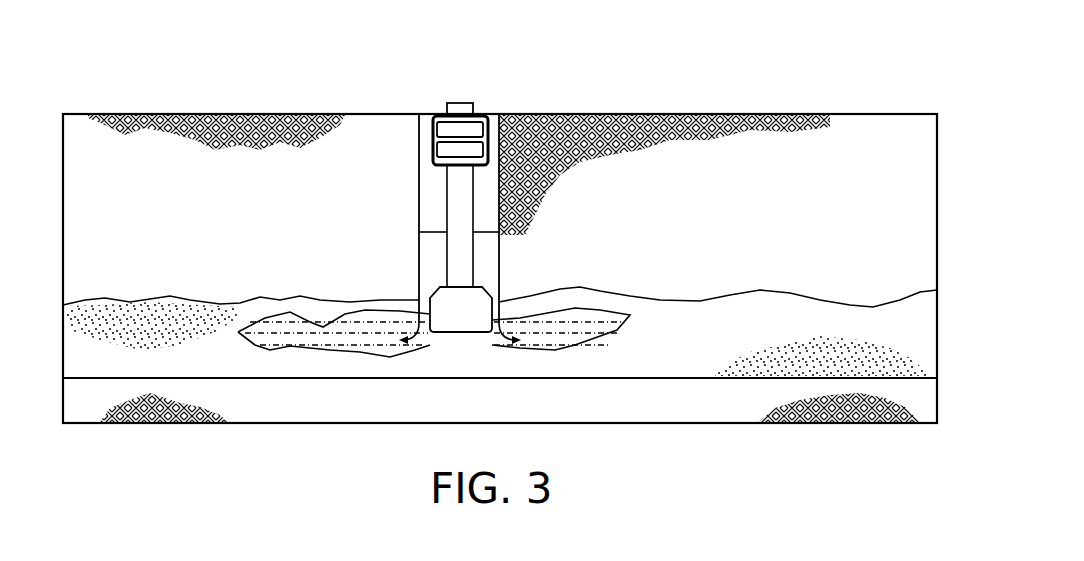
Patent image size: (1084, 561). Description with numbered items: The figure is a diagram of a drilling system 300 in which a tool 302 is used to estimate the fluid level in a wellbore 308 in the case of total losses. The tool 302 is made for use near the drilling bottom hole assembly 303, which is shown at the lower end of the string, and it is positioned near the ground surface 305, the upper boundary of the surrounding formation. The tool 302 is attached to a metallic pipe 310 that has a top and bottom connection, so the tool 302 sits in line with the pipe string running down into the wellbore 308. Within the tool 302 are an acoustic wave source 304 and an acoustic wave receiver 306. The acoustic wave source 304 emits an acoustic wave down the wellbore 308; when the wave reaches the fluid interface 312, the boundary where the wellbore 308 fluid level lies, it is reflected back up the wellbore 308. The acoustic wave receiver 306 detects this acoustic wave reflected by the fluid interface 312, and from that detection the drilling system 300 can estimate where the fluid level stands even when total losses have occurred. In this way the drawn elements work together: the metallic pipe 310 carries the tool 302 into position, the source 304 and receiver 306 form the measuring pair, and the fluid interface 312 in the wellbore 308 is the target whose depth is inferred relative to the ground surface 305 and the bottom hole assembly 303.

The drilling system 300 is at (738, 77).
The tool 302 is at (436, 167).
The drilling bottom hole assembly 303 is at (482, 325).
The acoustic wave source 304 is at (492, 160).
The ground surface 305 is at (573, 110).
The acoustic wave receiver 306 is at (487, 128).
The wellbore 308 is at (502, 270).
The metallic pipe 310 is at (478, 108).
The fluid interface 312 is at (437, 232).